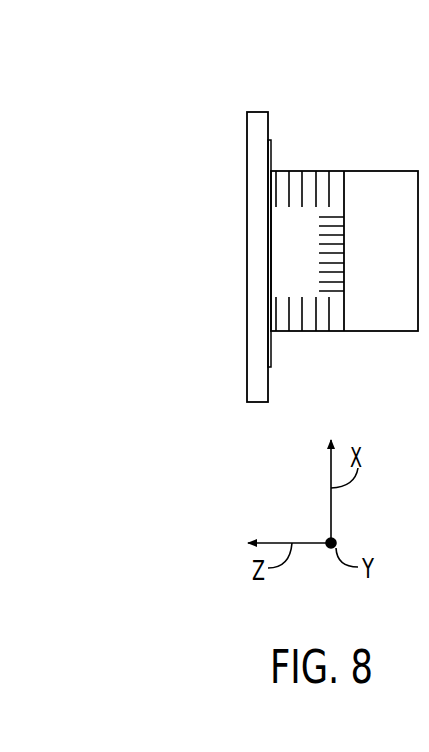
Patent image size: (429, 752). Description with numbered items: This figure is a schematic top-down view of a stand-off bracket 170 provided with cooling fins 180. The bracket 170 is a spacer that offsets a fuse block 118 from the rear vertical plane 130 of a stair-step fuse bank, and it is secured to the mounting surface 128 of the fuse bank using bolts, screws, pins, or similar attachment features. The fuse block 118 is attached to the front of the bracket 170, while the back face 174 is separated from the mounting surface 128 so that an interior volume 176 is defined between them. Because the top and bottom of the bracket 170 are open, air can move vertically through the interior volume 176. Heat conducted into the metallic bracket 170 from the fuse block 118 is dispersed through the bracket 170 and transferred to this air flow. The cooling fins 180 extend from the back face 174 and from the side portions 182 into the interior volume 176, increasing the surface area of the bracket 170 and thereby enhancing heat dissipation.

The mounting surface 128 is at (272, 118).
The rear vertical plane 130 is at (269, 253).
The fuse block 118 is at (398, 241).
The back face 174 is at (343, 189).
The side portions 182 is at (297, 335).
The stand-off bracket 170 is at (348, 253).
The interior volume 176 is at (288, 246).
The cooling fins 180 is at (313, 272).